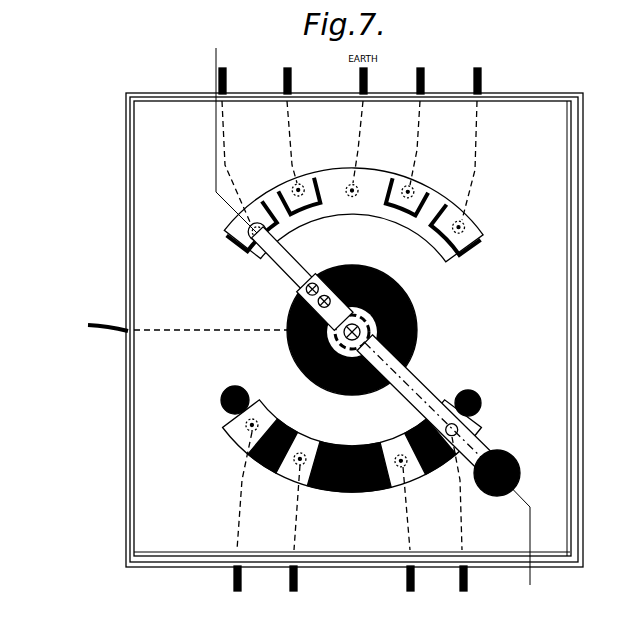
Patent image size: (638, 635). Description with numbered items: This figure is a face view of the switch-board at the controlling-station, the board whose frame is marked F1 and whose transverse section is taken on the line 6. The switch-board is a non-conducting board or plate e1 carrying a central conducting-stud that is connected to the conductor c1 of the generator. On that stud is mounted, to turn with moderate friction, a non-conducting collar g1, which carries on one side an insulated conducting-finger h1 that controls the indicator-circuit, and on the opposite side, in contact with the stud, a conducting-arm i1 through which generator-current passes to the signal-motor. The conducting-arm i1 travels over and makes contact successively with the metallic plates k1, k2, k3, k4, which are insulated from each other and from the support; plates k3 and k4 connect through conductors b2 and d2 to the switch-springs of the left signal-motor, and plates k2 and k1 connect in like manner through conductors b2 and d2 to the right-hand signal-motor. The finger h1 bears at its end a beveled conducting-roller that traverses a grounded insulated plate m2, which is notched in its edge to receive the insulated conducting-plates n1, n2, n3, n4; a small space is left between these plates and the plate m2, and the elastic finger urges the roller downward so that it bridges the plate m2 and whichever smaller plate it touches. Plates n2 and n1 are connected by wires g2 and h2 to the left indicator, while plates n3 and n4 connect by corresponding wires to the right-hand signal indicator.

The frame of switch casing F1 is at (350, 330).
The section line 6 6 is at (377, 314).
The non-conducting board or plate e1 is at (337, 357).
The non-conducting collar g1 is at (301, 344).
The insulated conducting-plate n4 is at (255, 222).
The insulated conducting-plate n3 is at (302, 183).
The insulated plate m2 is at (362, 197).
The insulated conducting-plate n2 is at (398, 181).
The insulated conducting-plate n1 is at (468, 231).
The metallic plate k4 is at (240, 434).
The metallic plate k3 is at (293, 460).
The metallic plate k2 is at (396, 468).
The metallic plate k1 is at (462, 432).
The insulated conducting-finger h1 is at (283, 265).
The conducting-arm i1 is at (438, 415).
The wire h2 is at (343, 138).
The wire g2 is at (355, 119).
The conductor d2 is at (340, 520).
The conductor b2 is at (355, 536).
The conductor c1 is at (101, 330).